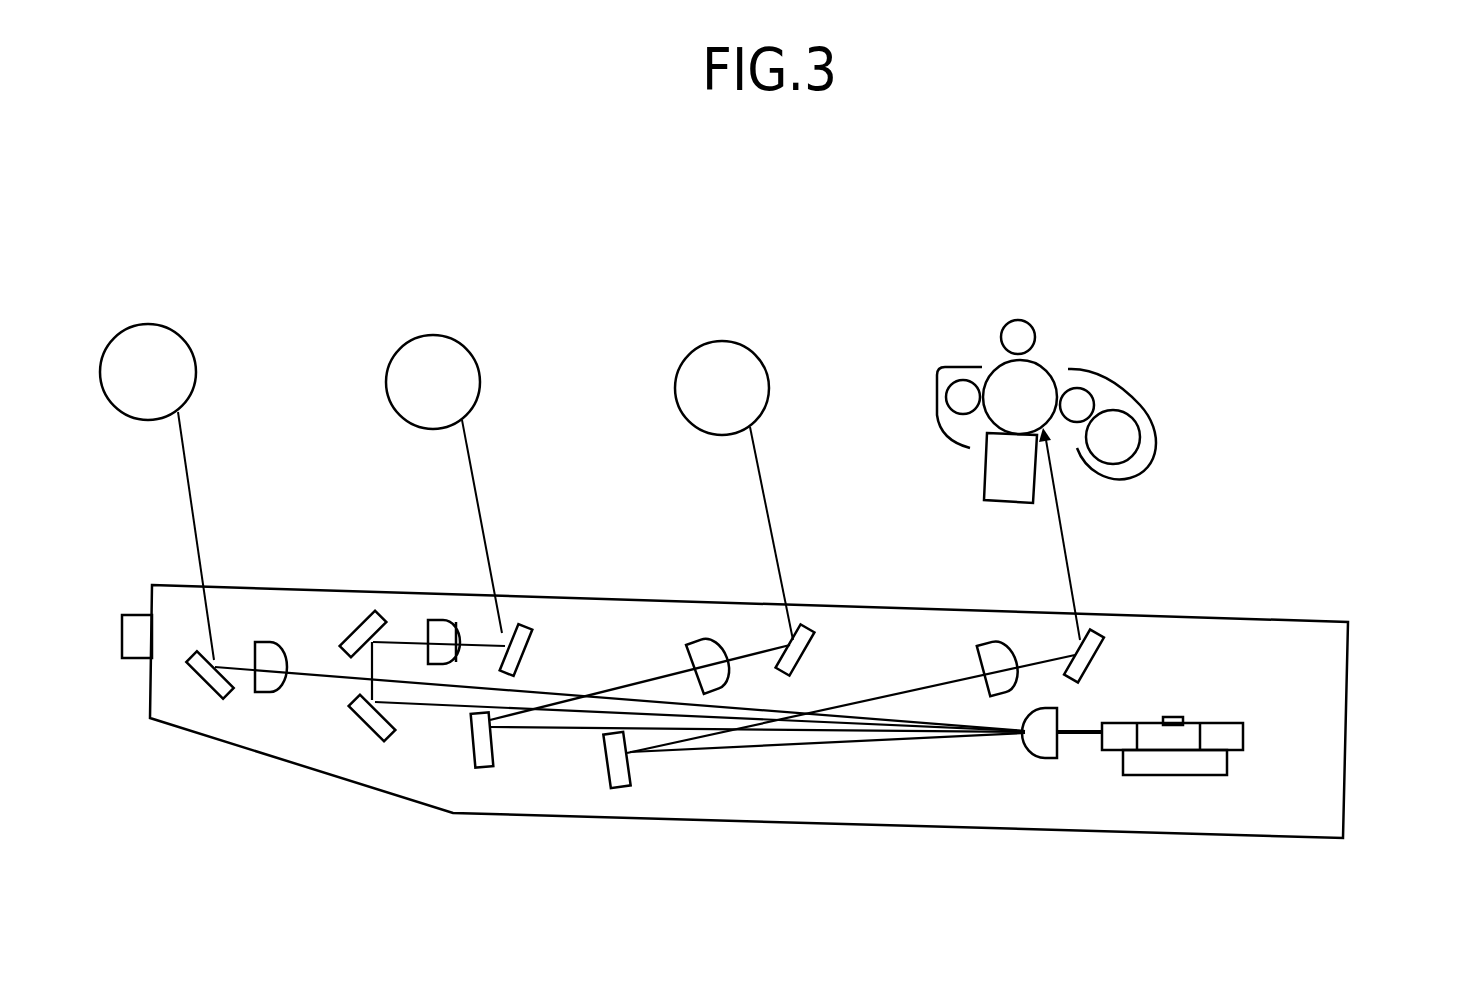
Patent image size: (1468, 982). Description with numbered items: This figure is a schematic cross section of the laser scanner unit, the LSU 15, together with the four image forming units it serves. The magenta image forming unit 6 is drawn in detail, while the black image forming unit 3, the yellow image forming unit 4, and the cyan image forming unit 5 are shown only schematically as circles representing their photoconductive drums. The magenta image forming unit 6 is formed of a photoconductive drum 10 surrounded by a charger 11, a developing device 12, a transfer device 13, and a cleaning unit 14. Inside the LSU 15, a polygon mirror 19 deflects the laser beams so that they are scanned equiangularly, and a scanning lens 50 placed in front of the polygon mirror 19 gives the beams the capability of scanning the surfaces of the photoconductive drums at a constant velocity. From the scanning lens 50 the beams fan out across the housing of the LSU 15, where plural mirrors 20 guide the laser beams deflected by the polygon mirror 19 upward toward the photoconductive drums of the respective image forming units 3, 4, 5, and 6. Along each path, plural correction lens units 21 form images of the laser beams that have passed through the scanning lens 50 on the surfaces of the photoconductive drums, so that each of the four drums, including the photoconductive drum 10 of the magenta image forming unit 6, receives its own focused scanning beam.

The black image forming unit 3 is at (140, 322).
The yellow image forming unit 4 is at (430, 334).
The cyan image forming unit 5 is at (712, 342).
The magenta image forming unit 6 is at (988, 358).
The photoconductive drum 10 is at (1023, 387).
The charger 11 is at (985, 468).
The developing device 12 is at (1152, 426).
The transfer device 13 is at (1022, 332).
The cleaning unit 14 is at (938, 380).
The LSU 15 is at (1318, 622).
The polygon mirror 19 is at (1212, 736).
The mirrors 20 is at (208, 694).
The correction lens units 21 is at (268, 642).
The scanning lens 50 is at (1037, 757).